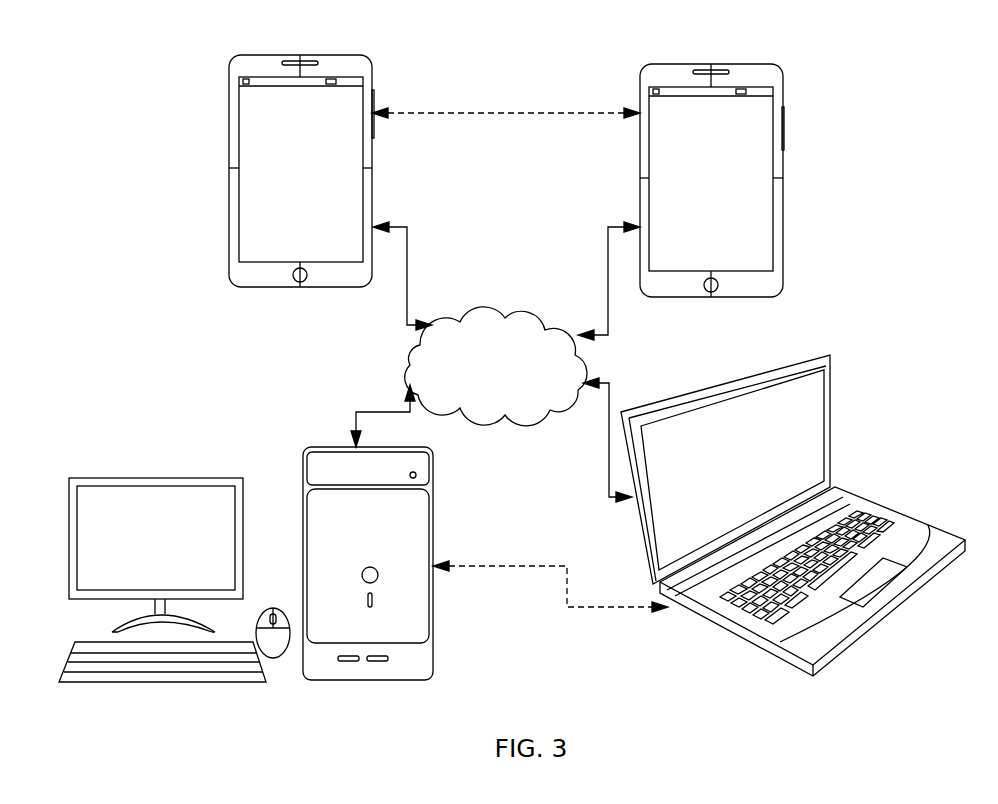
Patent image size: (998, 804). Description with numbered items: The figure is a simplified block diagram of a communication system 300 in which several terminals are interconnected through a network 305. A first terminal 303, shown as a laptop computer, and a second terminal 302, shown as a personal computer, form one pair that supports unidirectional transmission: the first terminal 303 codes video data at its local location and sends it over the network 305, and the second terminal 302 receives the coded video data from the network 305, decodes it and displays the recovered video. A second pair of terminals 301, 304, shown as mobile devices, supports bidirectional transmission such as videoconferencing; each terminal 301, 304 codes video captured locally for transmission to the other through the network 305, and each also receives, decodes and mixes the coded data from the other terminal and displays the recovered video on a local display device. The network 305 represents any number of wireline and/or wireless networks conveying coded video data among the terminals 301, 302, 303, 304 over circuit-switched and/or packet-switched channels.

The communication system 300 is at (93, 45).
The terminal 301 is at (227, 153).
The second terminal 302 is at (435, 647).
The first terminal 303 is at (637, 520).
The terminal 304 is at (637, 152).
The network 305 is at (500, 310).